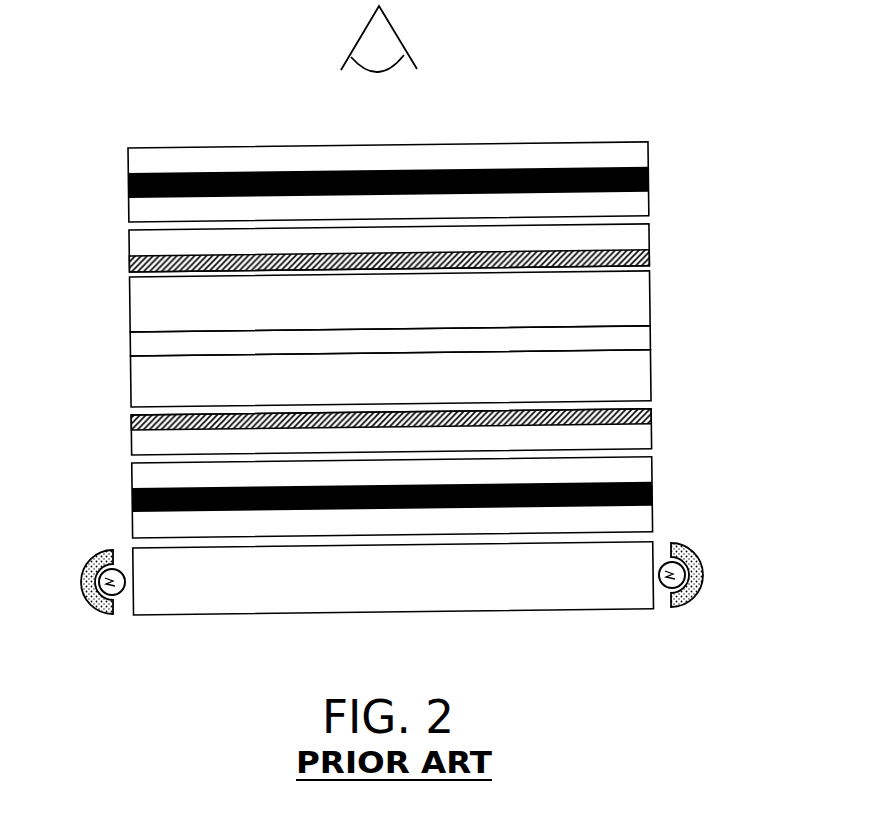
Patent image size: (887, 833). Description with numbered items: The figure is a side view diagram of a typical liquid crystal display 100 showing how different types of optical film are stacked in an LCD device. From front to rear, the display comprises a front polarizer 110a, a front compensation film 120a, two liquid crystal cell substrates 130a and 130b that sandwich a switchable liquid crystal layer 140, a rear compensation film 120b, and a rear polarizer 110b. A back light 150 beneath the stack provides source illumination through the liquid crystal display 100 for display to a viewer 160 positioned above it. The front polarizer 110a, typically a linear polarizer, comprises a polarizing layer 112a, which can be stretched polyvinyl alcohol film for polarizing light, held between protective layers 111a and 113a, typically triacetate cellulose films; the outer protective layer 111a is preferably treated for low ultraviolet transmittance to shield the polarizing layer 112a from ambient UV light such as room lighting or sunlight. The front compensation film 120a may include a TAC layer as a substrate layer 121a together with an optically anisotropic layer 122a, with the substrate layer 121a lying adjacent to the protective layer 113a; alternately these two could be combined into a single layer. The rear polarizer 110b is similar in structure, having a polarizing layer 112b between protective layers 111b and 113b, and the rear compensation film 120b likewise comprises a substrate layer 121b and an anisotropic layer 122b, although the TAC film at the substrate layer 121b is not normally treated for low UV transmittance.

The liquid crystal display 100 is at (240, 77).
The viewer 160 is at (408, 33).
The front polarizer 110a is at (390, 181).
The protective layer 111a is at (652, 156).
The polarizing layer 112a is at (652, 180).
The protective layer 113a is at (652, 205).
The front compensation film 120a is at (390, 243).
The substrate layer 121a is at (652, 231).
The optically anisotropic layer 122a is at (652, 262).
The liquid crystal cell substrate 130a is at (126, 313).
The switchable liquid crystal layer 140 is at (128, 351).
The liquid crystal cell substrate 130b is at (129, 390).
The rear compensation film 120b is at (393, 422).
The anisotropic layer 122b is at (655, 407).
The substrate layer 121b is at (655, 438).
The rear polarizer 110b is at (393, 494).
The protective layer 113b is at (655, 470).
The polarizing layer 112b is at (655, 497).
The protective layer 111b is at (655, 522).
The back light 150 is at (342, 578).